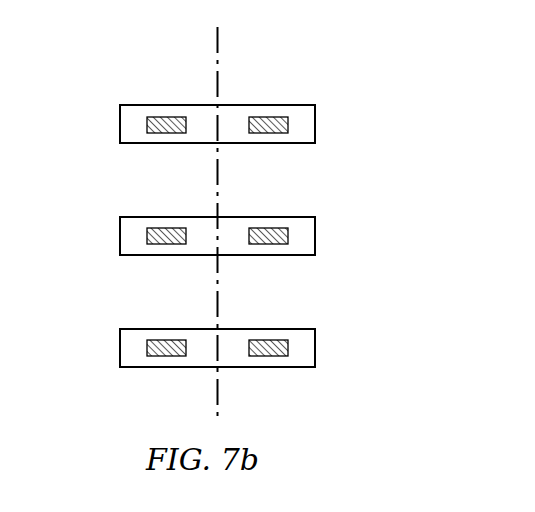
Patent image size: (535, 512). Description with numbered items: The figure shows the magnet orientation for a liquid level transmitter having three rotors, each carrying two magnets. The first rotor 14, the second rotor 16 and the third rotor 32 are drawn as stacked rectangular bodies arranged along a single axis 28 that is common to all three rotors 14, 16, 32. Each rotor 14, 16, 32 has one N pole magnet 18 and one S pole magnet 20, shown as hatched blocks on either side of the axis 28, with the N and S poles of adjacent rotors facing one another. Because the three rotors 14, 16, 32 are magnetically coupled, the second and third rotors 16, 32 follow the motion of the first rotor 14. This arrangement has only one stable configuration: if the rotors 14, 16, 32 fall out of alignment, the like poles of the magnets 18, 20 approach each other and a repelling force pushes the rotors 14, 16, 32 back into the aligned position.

The first rotor 14 is at (300, 367).
The second rotor 16 is at (300, 217).
The N pole magnet 18 is at (288, 124).
The S pole magnet 20 is at (147, 126).
The axis 28 is at (218, 43).
The third rotor 32 is at (300, 105).